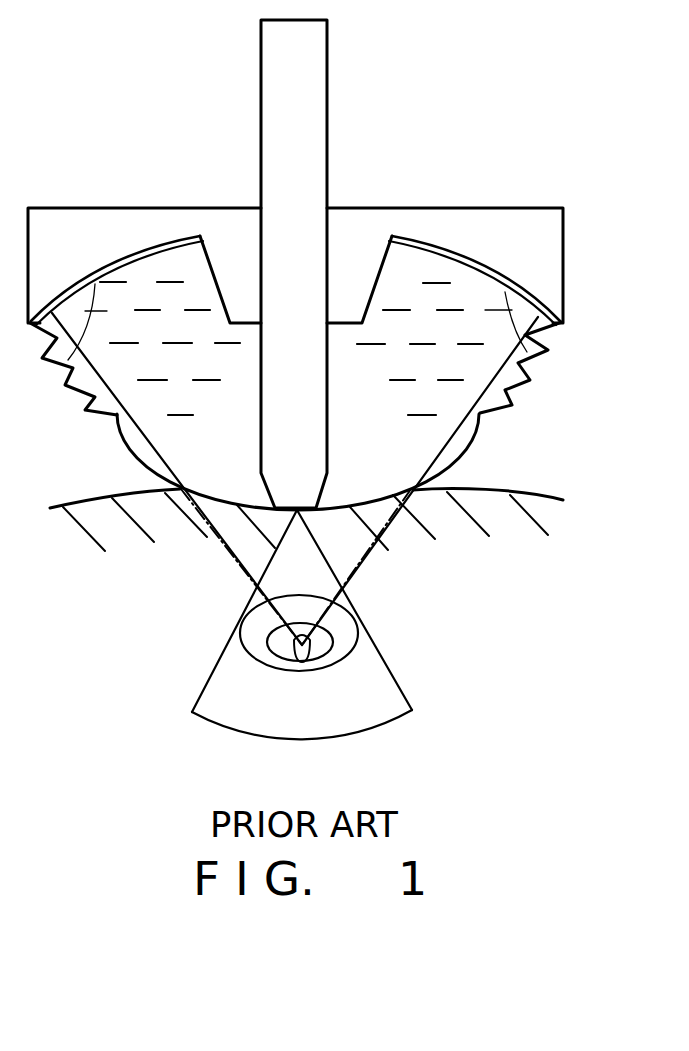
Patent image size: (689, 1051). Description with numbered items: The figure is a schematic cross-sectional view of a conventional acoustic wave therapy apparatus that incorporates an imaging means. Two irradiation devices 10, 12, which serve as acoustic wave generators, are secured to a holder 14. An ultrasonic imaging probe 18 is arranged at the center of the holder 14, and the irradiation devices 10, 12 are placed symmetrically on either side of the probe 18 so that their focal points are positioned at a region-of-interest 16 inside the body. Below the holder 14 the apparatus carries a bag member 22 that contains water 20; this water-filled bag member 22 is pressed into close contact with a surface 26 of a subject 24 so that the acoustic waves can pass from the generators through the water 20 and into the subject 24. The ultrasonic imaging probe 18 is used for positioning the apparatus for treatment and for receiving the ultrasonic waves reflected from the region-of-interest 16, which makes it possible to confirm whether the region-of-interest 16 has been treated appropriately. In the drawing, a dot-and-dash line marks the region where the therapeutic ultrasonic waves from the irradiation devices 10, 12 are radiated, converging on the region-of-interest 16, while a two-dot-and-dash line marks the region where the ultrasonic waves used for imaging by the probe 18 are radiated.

The irradiation device 10 is at (542, 362).
The irradiation device 12 is at (74, 352).
The holder 14 is at (425, 207).
The region-of-interest 16 is at (297, 650).
The ultrasonic imaging probe 18 is at (287, 183).
The water 20 is at (112, 417).
The bag member 22 is at (481, 414).
The subject 24 is at (563, 497).
The surface 26 is at (523, 490).